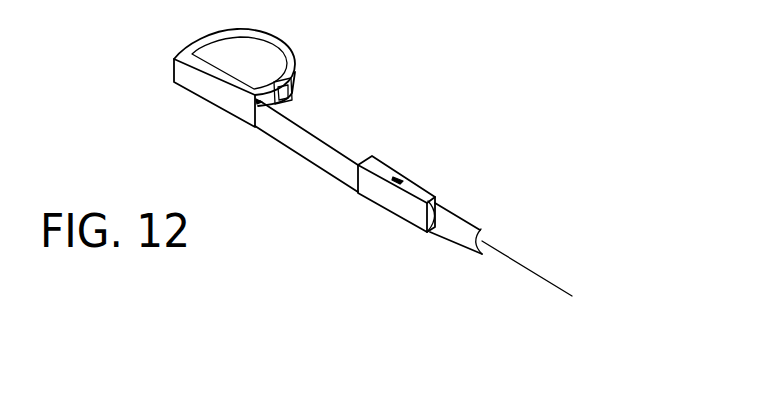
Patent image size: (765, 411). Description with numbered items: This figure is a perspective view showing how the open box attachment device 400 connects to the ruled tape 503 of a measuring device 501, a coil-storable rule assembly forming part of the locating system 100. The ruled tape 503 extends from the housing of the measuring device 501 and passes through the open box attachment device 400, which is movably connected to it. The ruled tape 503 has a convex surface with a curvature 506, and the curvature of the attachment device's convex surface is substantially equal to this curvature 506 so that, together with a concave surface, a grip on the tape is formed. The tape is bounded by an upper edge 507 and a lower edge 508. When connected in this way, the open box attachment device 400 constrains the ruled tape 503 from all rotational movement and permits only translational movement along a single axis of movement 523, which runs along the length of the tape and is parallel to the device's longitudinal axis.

The locating system 100 is at (303, 250).
The open box attachment device 400 is at (422, 188).
The measuring device 501 is at (217, 102).
The ruled tape 503 is at (306, 158).
The curvature 506 is at (483, 234).
The upper edge 507 is at (308, 115).
The lower edge 508 is at (330, 165).
The axis of movement 523 is at (175, 61).